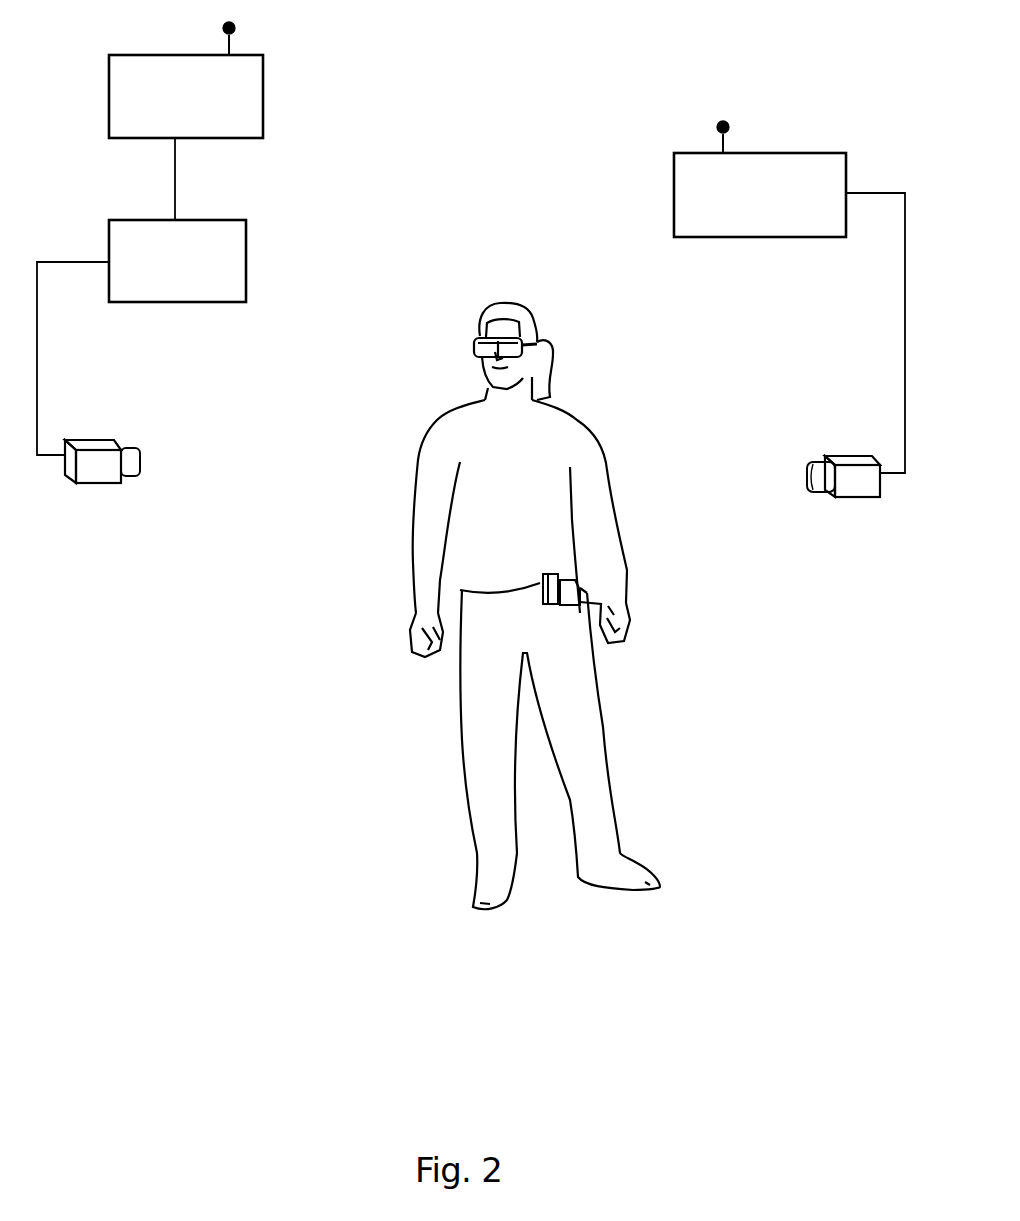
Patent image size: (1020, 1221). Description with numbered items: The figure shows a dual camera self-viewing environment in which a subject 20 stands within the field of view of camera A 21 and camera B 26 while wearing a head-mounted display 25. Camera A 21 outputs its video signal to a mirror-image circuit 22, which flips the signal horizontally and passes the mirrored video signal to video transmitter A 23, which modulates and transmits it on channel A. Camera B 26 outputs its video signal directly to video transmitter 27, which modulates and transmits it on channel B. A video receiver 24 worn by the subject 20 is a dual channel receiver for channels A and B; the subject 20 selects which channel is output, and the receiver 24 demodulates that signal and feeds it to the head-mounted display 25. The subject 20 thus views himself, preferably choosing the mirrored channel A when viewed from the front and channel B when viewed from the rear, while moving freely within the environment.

The subject 20 is at (462, 800).
The camera A 21 is at (94, 495).
The mirror-image circuit 22 is at (190, 305).
The video transmitter A 23 is at (101, 106).
The video receiver 24 is at (560, 613).
The head-mounted display 25 is at (466, 348).
The camera B 26 is at (858, 502).
The video transmitter 27 is at (778, 242).